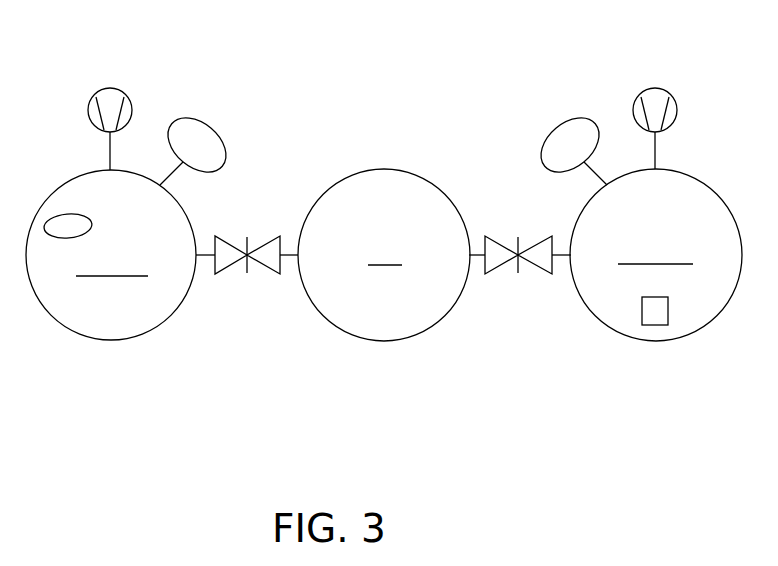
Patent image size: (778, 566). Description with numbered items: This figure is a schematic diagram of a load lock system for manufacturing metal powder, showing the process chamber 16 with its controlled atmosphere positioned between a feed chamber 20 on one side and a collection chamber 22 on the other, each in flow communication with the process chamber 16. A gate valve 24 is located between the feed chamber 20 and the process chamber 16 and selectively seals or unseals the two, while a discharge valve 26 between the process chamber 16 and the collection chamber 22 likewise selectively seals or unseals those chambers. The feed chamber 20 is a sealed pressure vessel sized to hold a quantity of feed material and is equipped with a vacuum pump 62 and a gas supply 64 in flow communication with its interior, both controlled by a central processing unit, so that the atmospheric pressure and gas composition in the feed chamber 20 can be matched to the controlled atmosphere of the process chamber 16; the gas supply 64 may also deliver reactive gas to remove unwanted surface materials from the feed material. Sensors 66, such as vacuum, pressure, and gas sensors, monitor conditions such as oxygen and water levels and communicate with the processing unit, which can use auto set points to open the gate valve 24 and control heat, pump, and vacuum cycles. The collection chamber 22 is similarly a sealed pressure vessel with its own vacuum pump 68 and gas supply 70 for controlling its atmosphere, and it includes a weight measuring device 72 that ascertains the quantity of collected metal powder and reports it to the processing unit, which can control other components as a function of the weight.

The process chamber 16 is at (383, 342).
The feed chamber 20 is at (111, 341).
The collection chamber 22 is at (656, 342).
The gate valve 24 is at (265, 274).
The discharge valve 26 is at (540, 273).
The vacuum pump 62 is at (110, 88).
The gas supply 64 is at (208, 128).
The sensor 66 is at (55, 215).
The vacuum pump 68 is at (654, 93).
The gas supply 70 is at (565, 118).
The weight measuring device 72 is at (658, 312).